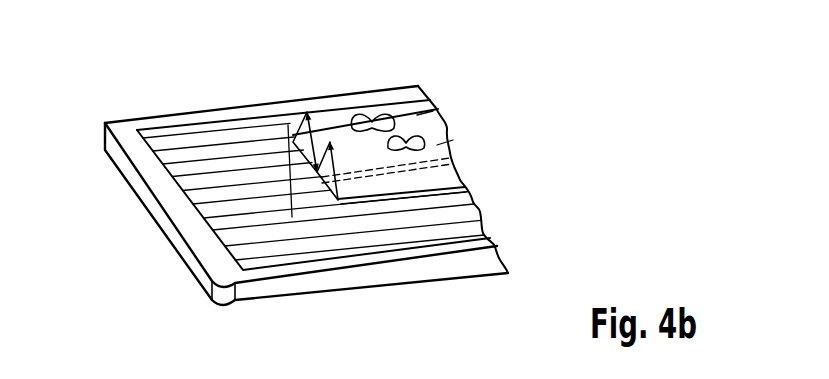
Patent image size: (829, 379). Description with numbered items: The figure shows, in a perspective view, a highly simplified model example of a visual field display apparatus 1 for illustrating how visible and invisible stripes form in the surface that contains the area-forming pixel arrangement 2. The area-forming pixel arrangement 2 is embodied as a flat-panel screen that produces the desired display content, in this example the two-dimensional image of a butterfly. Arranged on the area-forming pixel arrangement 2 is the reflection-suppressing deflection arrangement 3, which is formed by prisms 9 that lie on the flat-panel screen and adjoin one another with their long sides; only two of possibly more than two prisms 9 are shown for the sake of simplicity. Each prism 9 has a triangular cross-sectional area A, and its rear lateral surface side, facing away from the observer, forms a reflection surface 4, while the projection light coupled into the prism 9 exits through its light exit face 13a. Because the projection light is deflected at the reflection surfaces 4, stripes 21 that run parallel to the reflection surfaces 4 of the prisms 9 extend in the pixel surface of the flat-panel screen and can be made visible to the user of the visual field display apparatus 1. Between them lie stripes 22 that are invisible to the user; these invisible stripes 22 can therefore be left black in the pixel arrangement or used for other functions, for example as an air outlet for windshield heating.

The visual field display apparatus 1 is at (104, 65).
The area-forming pixel arrangement 2 is at (204, 253).
The reflection-suppressing deflection arrangement 3 is at (473, 98).
The reflection surface 4 is at (330, 141).
The prism 9 is at (353, 130).
The light exit face 13a is at (419, 112).
The visible stripe 21 is at (258, 193).
The invisible stripe 22 is at (283, 233).
The triangular cross-sectional area A is at (288, 125).